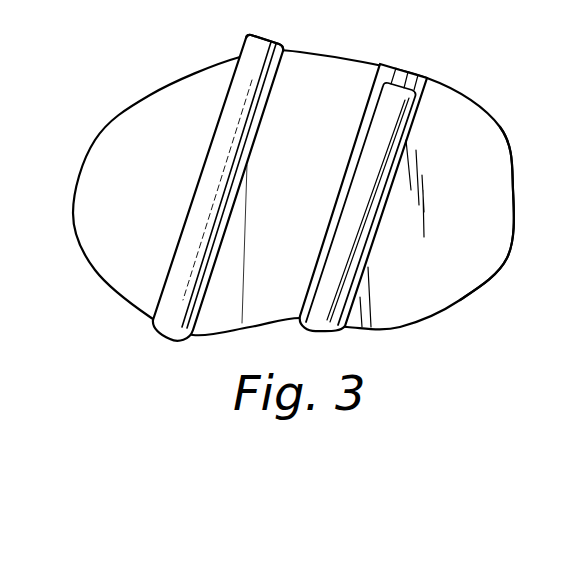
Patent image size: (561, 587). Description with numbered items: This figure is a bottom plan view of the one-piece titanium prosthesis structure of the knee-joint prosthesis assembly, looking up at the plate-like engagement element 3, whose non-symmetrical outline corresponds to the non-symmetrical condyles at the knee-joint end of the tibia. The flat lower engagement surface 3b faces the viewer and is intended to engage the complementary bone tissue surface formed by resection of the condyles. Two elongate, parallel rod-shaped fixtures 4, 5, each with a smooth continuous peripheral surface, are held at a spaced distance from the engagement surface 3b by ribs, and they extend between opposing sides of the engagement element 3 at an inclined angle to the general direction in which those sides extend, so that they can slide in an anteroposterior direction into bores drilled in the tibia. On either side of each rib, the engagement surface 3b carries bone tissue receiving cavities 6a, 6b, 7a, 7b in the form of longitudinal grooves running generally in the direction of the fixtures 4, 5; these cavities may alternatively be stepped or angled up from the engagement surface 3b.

The plate-like engagement element 3 is at (497, 127).
The lower engagement surface 3b is at (489, 240).
The first fixture 4 is at (244, 198).
The second fixture 5 is at (397, 196).
The bone tissue receiving cavity 6a is at (243, 55).
The bone tissue receiving cavity 6b is at (283, 60).
The bone tissue receiving cavity 7a is at (415, 118).
The bone tissue receiving cavity 7b is at (390, 72).